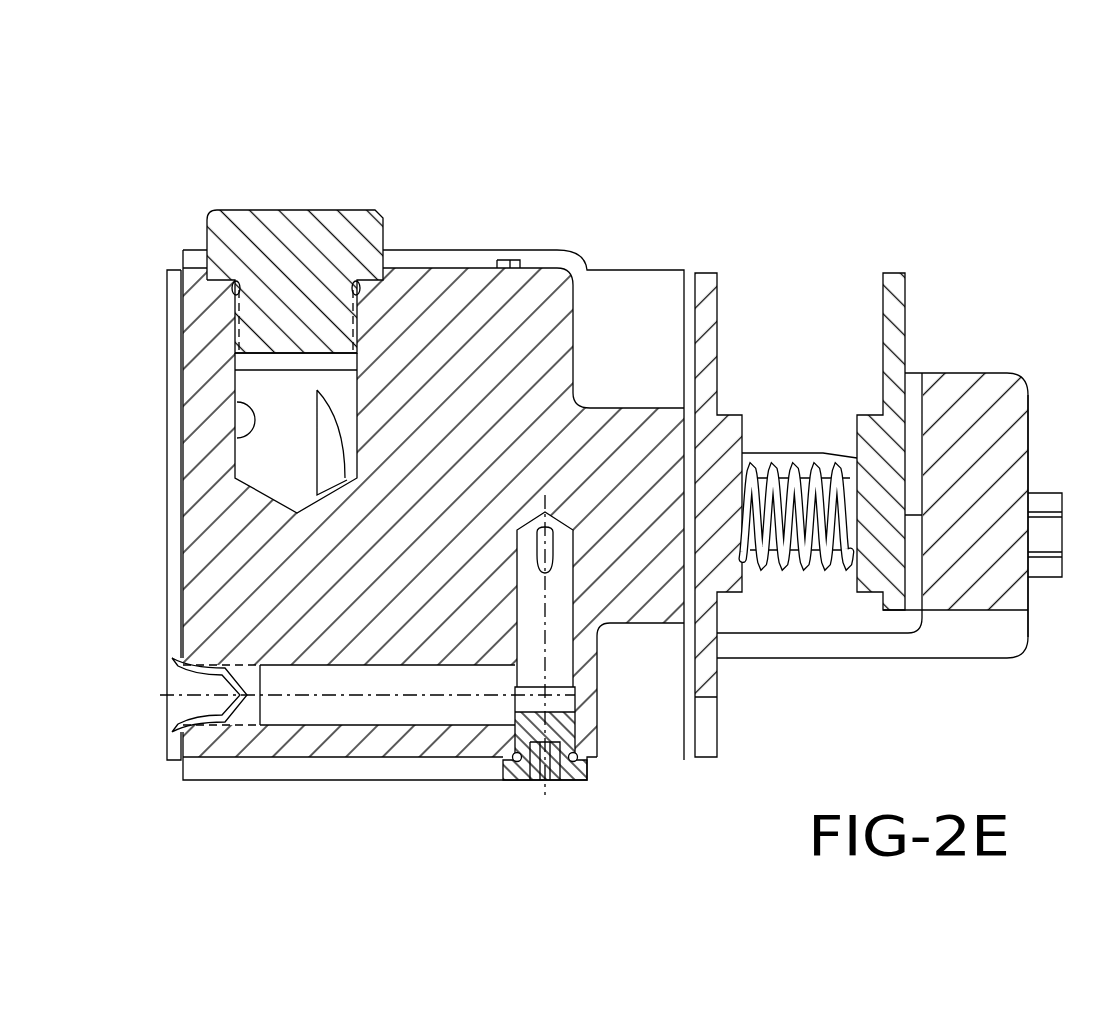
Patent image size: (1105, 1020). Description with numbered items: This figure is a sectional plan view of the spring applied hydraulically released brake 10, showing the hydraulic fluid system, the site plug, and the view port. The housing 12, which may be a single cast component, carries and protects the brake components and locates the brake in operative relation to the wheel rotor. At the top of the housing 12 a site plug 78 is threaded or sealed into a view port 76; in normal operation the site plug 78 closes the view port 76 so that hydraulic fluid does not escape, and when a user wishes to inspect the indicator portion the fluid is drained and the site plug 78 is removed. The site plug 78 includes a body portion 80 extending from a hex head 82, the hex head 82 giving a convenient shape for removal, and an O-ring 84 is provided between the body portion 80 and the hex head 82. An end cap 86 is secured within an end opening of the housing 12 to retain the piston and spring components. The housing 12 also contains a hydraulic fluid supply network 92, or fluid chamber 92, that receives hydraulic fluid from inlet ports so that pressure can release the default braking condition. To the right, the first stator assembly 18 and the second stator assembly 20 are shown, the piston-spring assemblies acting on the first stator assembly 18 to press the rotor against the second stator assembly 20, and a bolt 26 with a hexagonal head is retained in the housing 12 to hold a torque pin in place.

The spring applied hydraulically released brake 10 is at (1025, 180).
The housing 12 is at (207, 358).
The first stator assembly 18 is at (707, 270).
The second stator assembly 20 is at (897, 270).
The bolt 26 is at (1047, 532).
The view port 76 is at (250, 423).
The site plug 78 is at (237, 208).
The body portion 80 is at (300, 315).
The hex head 82 is at (283, 237).
The O-ring 84 is at (233, 290).
The end cap 86 is at (173, 572).
The hydraulic fluid supply network 92 is at (363, 700).